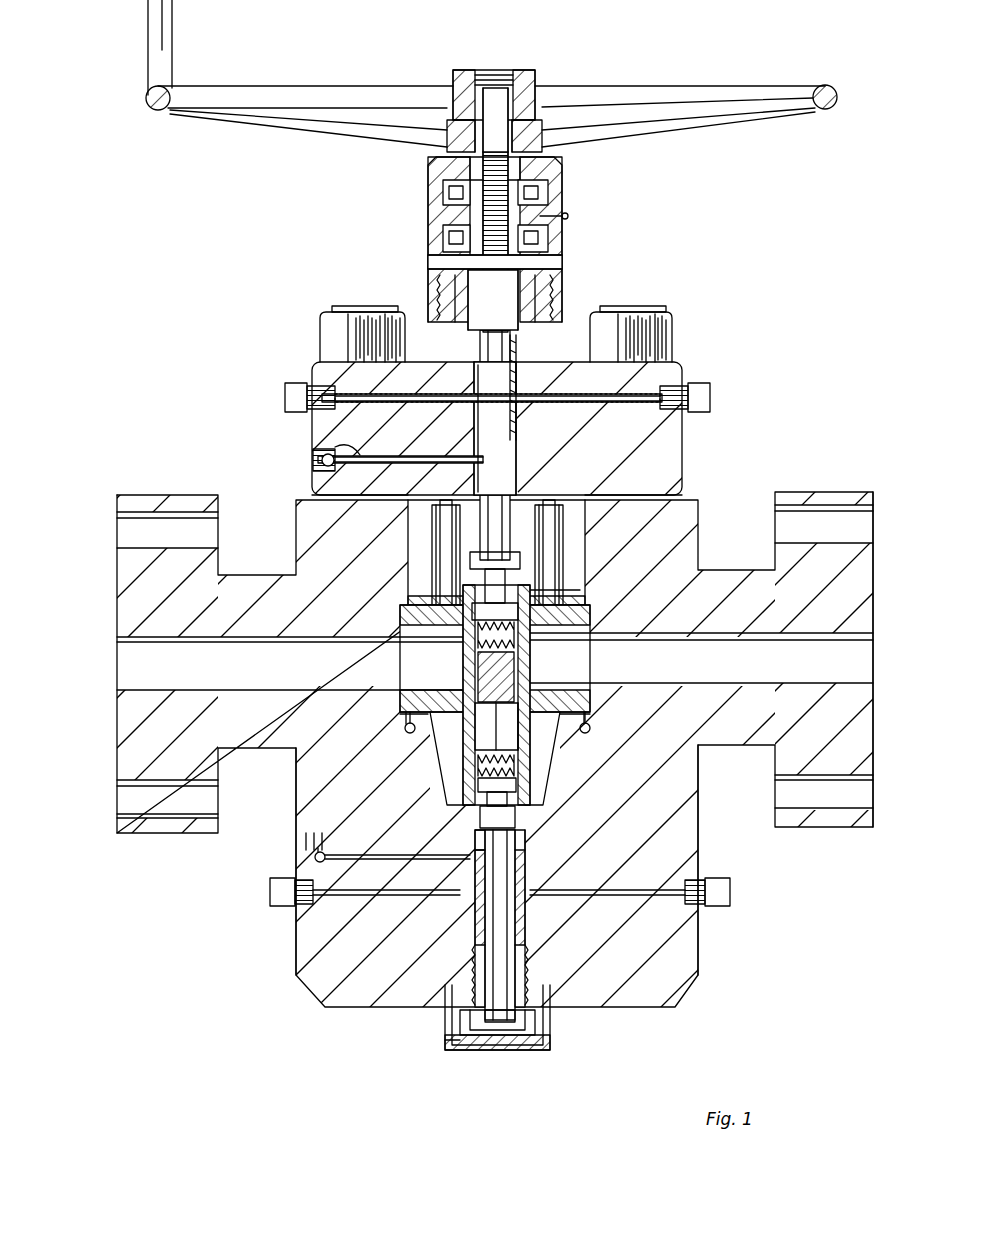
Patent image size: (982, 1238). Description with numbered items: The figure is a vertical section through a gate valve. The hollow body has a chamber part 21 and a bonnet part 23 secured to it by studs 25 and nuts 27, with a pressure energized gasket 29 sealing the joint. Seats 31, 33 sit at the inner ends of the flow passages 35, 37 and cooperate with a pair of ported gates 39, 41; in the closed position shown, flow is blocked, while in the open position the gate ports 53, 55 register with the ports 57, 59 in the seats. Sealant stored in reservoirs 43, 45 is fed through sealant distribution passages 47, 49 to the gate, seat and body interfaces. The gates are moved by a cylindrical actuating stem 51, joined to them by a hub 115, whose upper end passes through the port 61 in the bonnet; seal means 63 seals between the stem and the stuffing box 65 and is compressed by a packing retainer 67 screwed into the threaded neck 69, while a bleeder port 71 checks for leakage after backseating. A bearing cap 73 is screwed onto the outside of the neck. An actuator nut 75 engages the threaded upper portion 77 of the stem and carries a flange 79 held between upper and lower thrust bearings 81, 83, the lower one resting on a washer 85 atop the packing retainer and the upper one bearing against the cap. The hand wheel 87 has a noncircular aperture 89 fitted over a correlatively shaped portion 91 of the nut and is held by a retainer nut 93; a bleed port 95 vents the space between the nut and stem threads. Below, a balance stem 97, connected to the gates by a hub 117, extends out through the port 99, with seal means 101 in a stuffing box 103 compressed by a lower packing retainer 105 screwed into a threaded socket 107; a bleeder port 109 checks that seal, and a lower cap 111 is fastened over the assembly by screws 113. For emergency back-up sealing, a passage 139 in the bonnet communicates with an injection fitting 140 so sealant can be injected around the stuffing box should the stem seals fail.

The chamber part 21 is at (760, 470).
The bonnet part 23 is at (682, 427).
The studs 25 is at (640, 305).
The nuts 27 is at (672, 322).
The pressure energized gasket 29 is at (570, 495).
The seat 31 is at (440, 745).
The seat 33 is at (585, 720).
The passage 35 is at (123, 672).
The passage 37 is at (873, 672).
The ported gate 39 is at (462, 660).
The ported gate 41 is at (538, 657).
The sealant reservoir 43 is at (436, 545).
The sealant reservoir 45 is at (568, 530).
The sealant distribution passage 47 is at (430, 596).
The sealant distribution passage 49 is at (575, 595).
The actuating stem 51 is at (505, 465).
The gate port 53 is at (491, 728).
The gate port 55 is at (523, 728).
The seat port 57 is at (418, 680).
The seat port 59 is at (592, 675).
The port 61 is at (506, 468).
The seal means 63 is at (535, 365).
The stuffing box 65 is at (474, 434).
The packing retainer 67 is at (555, 262).
The threaded neck 69 is at (540, 298).
The bleeder port 71 is at (325, 447).
The bearing cap 73 is at (565, 238).
The actuator nut 75 is at (555, 168).
The threaded upper portion 77 is at (540, 185).
The flange 79 is at (445, 222).
The upper thrust bearing 81 is at (443, 190).
The lower thrust bearing 83 is at (445, 240).
The washer 85 is at (445, 258).
The hand wheel 87 is at (825, 85).
The noncircular aperture 89 is at (530, 128).
The correlatively shaped portion 91 is at (545, 125).
The retainer nut 93 is at (535, 75).
The bleed port 95 is at (555, 208).
The balance stem 97 is at (480, 890).
The port 99 is at (530, 845).
The seal means 101 is at (530, 870).
The stuffing box 103 is at (480, 845).
The lower packing retainer 105 is at (525, 1030).
The threaded socket 107 is at (478, 960).
The bleeder port 109 is at (330, 852).
The lower cap 111 is at (485, 1045).
The screws 113 is at (448, 1048).
The hub 115 is at (570, 590).
The hub 117 is at (550, 790).
The passage 139 is at (682, 380).
The injection fitting 140 is at (710, 388).